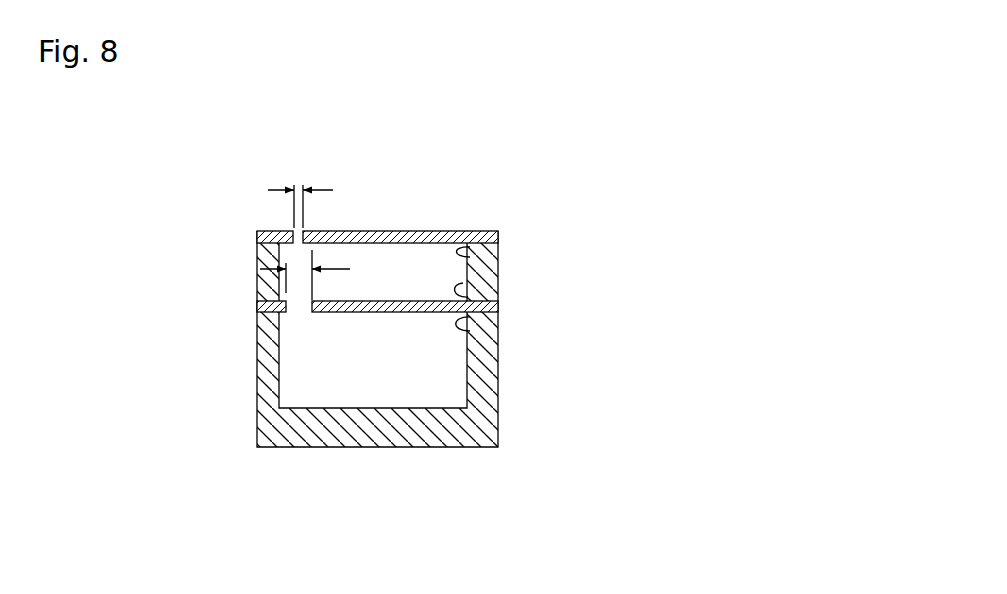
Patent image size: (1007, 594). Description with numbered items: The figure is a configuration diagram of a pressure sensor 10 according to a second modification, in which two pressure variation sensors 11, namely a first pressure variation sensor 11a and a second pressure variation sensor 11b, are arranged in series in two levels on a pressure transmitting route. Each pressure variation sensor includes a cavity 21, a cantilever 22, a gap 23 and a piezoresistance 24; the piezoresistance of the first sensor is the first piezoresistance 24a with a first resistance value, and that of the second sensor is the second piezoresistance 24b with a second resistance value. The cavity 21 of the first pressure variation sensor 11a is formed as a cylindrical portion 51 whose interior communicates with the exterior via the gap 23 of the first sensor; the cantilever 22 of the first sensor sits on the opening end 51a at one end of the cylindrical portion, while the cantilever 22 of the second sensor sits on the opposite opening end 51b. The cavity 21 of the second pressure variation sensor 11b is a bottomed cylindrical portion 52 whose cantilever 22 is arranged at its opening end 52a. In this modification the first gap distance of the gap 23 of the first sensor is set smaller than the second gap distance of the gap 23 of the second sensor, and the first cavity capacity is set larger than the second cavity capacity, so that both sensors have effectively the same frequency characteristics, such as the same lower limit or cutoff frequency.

The pressure sensor 10 is at (606, 160).
The pressure variation sensor 11 is at (214, 246).
The first pressure variation sensor (P1) 11a is at (254, 230).
The second pressure variation sensor (P2) 11b is at (254, 300).
The cavity 21 is at (350, 283).
The cantilever 22 is at (487, 238).
The gap 23 is at (294, 222).
The piezoresistance 24 is at (487, 250).
The first piezoresistance 24a is at (483, 232).
The second piezoresistance 24b is at (490, 292).
The cylindrical portion 51 is at (543, 267).
The opening end 51a is at (470, 257).
The opening end 51b is at (463, 283).
The bottomed cylindrical portion 52 is at (517, 352).
The opening end 52a is at (470, 331).